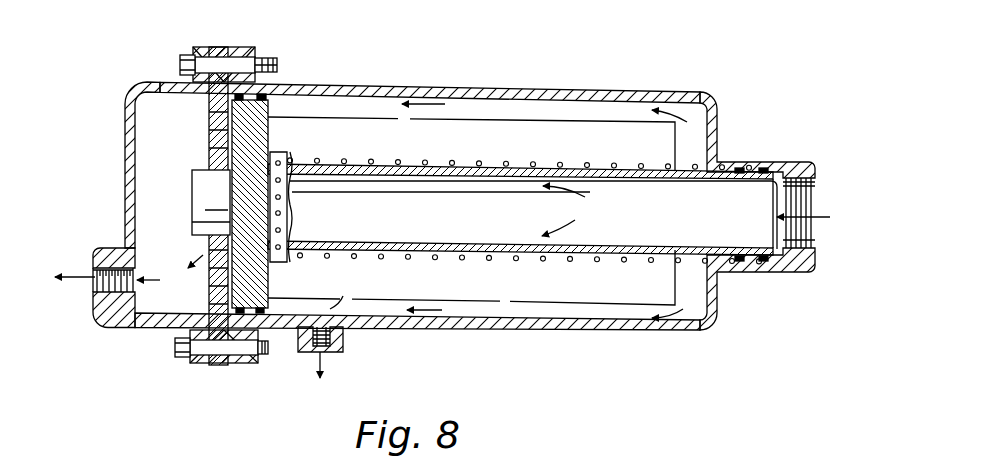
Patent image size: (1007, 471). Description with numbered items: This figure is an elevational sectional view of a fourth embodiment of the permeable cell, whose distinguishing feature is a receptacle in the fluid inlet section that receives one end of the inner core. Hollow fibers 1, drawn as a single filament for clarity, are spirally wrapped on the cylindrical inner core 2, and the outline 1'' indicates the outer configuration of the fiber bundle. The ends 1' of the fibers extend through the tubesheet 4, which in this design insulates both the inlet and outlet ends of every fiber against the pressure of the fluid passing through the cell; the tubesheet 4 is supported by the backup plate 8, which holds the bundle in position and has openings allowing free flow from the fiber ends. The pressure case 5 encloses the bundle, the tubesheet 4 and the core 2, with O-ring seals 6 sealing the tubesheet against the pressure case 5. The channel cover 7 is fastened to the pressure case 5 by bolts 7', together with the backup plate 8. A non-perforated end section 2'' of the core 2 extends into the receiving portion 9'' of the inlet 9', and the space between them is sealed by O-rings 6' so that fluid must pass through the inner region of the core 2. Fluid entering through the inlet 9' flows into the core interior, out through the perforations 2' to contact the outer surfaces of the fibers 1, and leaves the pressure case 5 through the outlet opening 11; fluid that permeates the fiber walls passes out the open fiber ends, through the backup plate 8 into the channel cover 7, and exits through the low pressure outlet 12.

The hollow fibers 1 is at (525, 198).
The ends of the fibers 1' is at (214, 203).
The outline of the fiber bundle 1'' is at (477, 211).
The inner core 2 is at (520, 194).
The perforations of the inner core 2' is at (612, 150).
The non-perforated end section of the inner core 2'' is at (533, 212).
The tubesheet 4 is at (268, 128).
The pressure case 5 is at (482, 90).
The O-ring seals 6 is at (283, 179).
The O-ring seals 6' is at (765, 178).
The channel cover 7 is at (141, 137).
The bolts 7' is at (246, 212).
The backup plate 8 is at (220, 127).
The inlet 9' is at (803, 171).
The receiving portion of the inlet 9'' is at (757, 211).
The outlet opening 11 is at (333, 352).
The low pressure outlet 12 is at (93, 291).